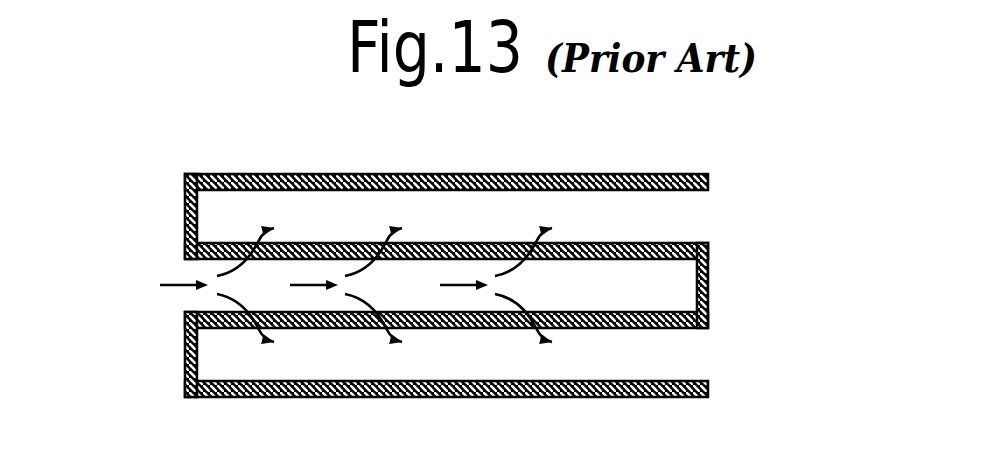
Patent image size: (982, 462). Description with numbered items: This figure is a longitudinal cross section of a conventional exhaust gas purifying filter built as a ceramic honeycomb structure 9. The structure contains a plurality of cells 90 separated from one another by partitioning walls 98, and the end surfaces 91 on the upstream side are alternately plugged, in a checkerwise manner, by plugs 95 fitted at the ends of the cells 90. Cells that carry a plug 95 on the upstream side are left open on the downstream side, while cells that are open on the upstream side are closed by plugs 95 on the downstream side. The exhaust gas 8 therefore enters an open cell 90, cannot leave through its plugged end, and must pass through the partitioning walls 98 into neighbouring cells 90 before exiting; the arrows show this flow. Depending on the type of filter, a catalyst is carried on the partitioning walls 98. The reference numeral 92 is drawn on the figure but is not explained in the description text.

The ceramic honeycomb structure 9 is at (684, 162).
The end surface 91 is at (166, 190).
The inner flat tube 92 is at (714, 230).
The plug 95 is at (185, 220).
The partitioning wall 98 is at (570, 245).
The cell 90 is at (462, 217).
The exhaust gas 8 is at (165, 285).